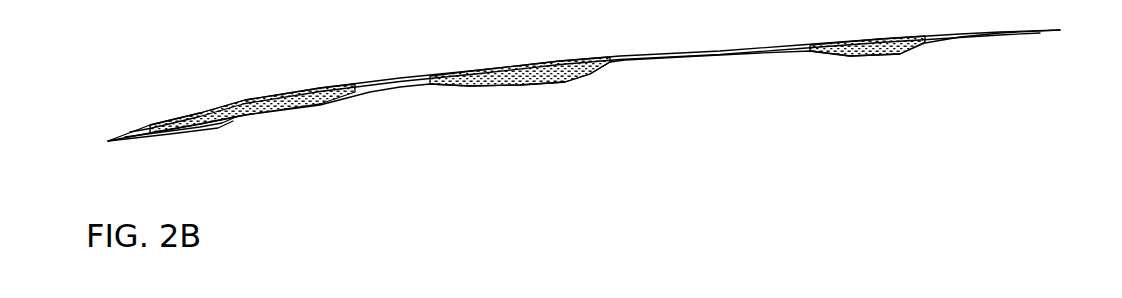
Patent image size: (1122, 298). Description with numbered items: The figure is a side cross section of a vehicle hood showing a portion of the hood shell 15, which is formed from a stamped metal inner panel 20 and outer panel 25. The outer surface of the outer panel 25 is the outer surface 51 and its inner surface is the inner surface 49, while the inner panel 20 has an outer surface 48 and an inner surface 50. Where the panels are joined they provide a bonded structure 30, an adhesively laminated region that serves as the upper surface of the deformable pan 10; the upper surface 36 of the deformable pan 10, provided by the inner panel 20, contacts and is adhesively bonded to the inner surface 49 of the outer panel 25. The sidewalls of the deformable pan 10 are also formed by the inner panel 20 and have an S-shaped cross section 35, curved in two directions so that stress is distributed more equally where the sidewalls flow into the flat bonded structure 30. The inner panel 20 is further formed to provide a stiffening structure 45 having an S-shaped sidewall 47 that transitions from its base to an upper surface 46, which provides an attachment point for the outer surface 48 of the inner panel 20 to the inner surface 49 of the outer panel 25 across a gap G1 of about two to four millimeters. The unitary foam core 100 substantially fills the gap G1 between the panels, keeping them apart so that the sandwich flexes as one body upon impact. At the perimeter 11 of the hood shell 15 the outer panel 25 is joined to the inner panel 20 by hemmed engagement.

The deformable pan 10 is at (673, 58).
The perimeter 11 is at (108, 140).
The hood shell 15 is at (769, 37).
The inner panel 20 is at (309, 116).
The outer panel 25 is at (296, 79).
The bonded structure 30 is at (688, 52).
The S-shaped cross section 35 is at (593, 67).
The upper surface 36 is at (718, 56).
The stiffening structure 45 is at (409, 67).
The upper surface 46 is at (402, 90).
The S-shaped sidewall 47 is at (463, 88).
The outer surface 48 is at (270, 103).
The inner surface 49 is at (246, 113).
The inner surface 50 is at (340, 102).
The outer surface 51 is at (330, 88).
The unitary foam core 100 is at (285, 95).
The gap G1 is at (241, 109).